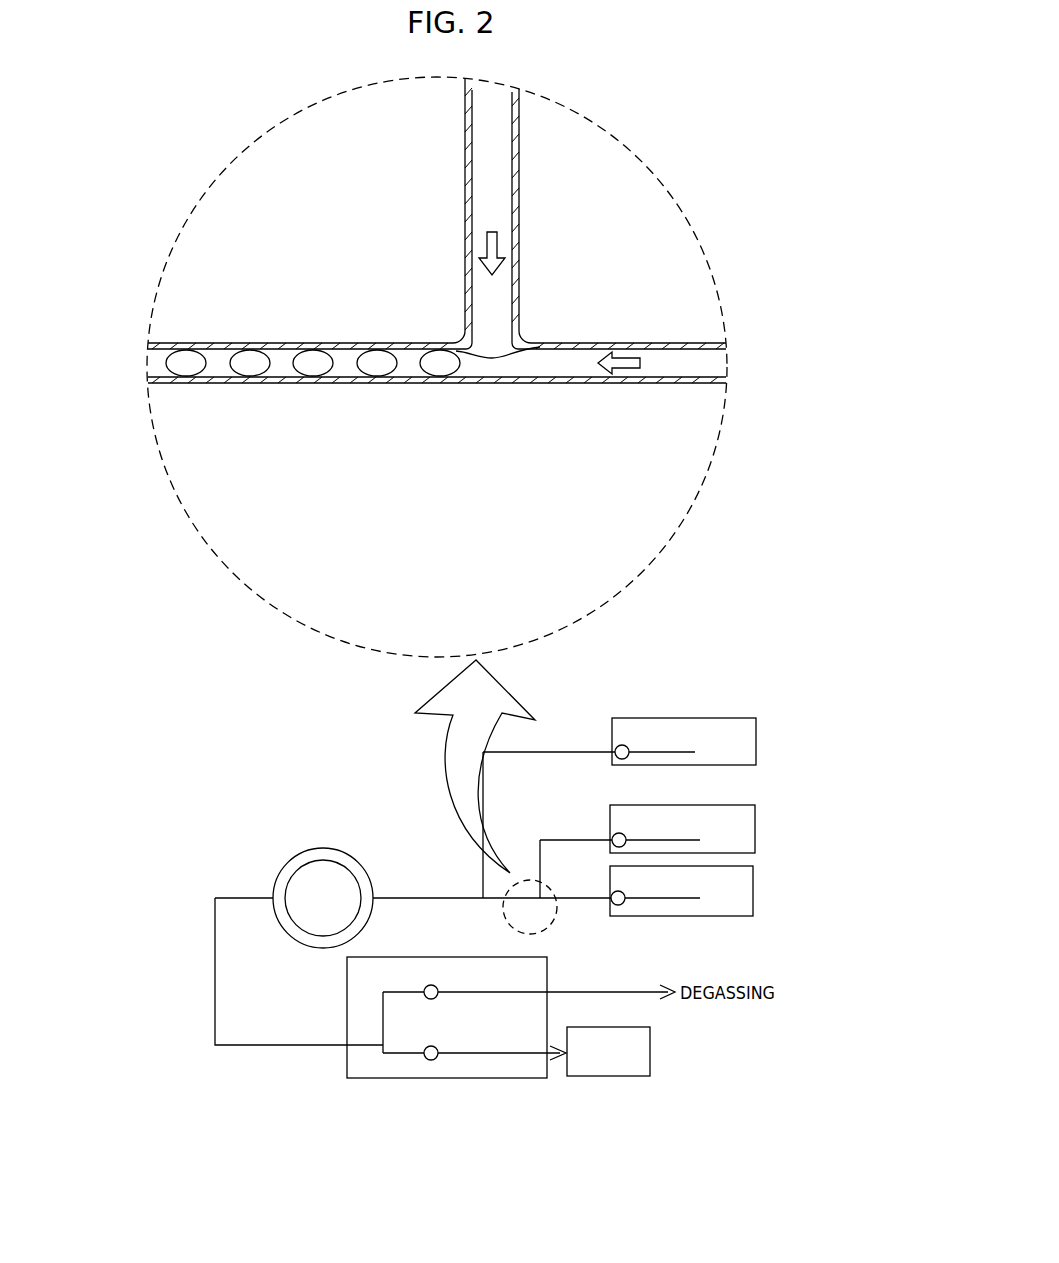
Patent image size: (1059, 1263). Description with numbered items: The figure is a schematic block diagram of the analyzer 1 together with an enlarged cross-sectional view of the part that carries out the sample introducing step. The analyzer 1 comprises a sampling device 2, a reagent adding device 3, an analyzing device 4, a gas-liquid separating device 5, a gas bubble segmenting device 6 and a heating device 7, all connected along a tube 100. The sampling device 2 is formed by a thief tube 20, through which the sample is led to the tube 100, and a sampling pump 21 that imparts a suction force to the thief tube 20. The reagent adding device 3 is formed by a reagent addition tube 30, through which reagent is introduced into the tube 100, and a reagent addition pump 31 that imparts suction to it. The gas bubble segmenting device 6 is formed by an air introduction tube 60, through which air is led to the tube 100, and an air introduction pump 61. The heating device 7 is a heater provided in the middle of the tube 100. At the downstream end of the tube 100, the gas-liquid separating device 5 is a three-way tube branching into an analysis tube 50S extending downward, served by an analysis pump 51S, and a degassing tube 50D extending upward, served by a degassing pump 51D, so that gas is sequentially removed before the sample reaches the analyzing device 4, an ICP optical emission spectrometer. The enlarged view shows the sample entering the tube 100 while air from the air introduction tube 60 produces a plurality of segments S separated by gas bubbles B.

The analyzer 1 is at (712, 619).
The sampling device 2 is at (754, 877).
The reagent adding device 3 is at (757, 728).
The analyzing device 4 is at (587, 1028).
The gas-liquid separating device 5 is at (548, 971).
The gas bubble segmenting device 6 is at (756, 814).
The heating device 7 is at (335, 853).
The thief tube 20 is at (606, 343).
The sampling pump 21 is at (626, 898).
The reagent addition tube 30 is at (665, 752).
The reagent addition pump 31 is at (629, 752).
The degassing tube 50D is at (494, 992).
The analysis tube 50S is at (492, 1053).
The degassing pump 51D is at (438, 991).
The analysis pump 51S is at (438, 1052).
The air introduction tube 60 is at (520, 187).
The air introduction pump 61 is at (627, 840).
The tube 100 is at (157, 343).
The segments S is at (405, 356).
The gas bubbles B is at (440, 368).